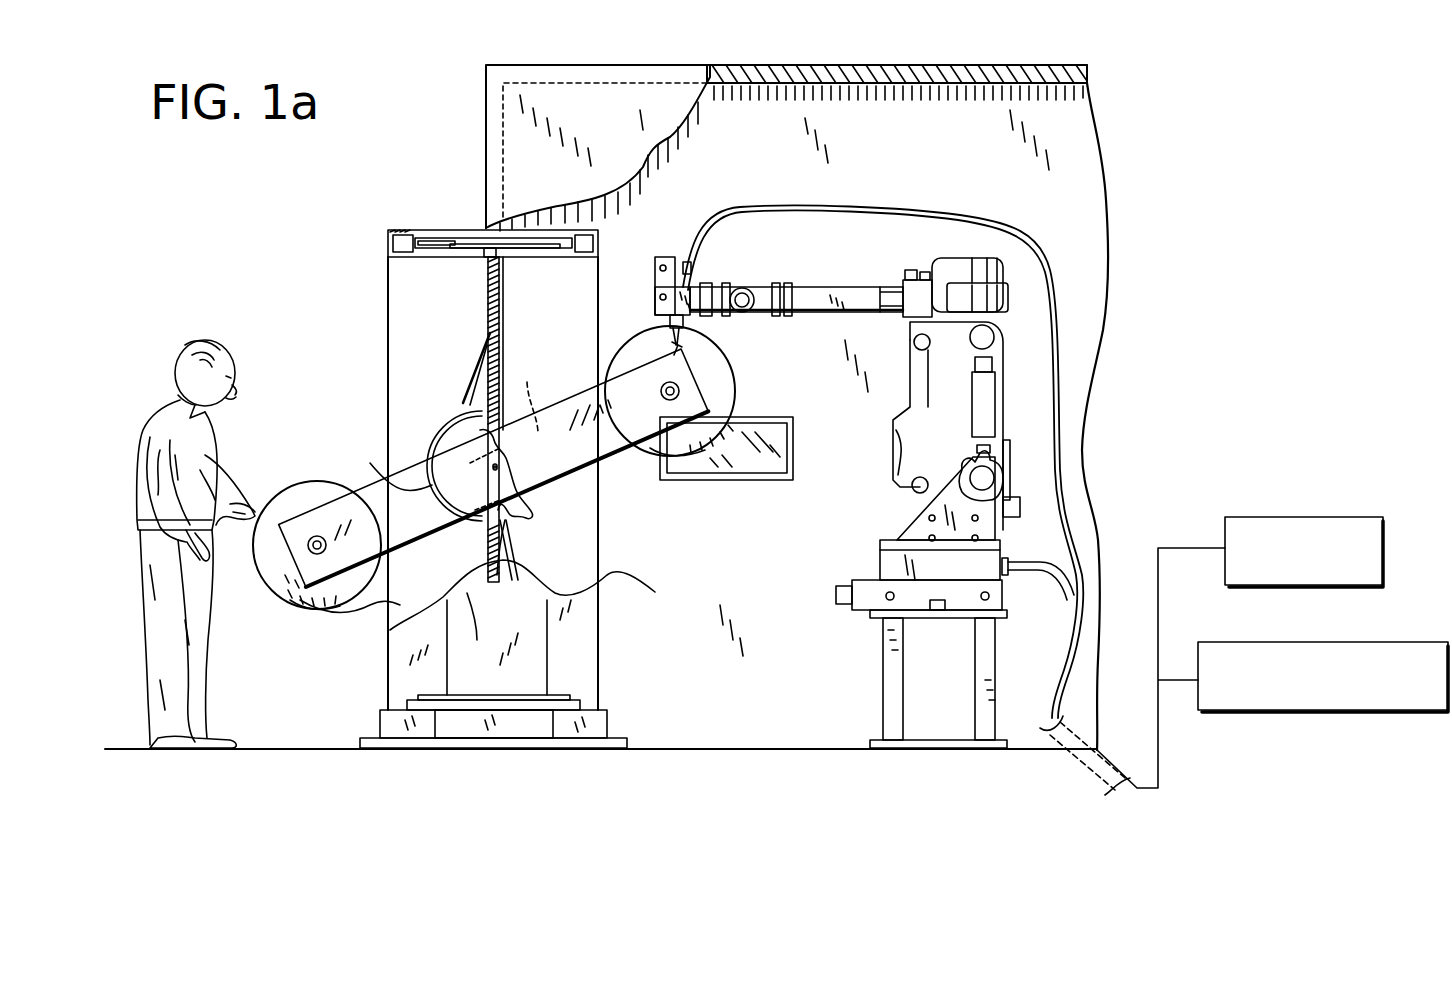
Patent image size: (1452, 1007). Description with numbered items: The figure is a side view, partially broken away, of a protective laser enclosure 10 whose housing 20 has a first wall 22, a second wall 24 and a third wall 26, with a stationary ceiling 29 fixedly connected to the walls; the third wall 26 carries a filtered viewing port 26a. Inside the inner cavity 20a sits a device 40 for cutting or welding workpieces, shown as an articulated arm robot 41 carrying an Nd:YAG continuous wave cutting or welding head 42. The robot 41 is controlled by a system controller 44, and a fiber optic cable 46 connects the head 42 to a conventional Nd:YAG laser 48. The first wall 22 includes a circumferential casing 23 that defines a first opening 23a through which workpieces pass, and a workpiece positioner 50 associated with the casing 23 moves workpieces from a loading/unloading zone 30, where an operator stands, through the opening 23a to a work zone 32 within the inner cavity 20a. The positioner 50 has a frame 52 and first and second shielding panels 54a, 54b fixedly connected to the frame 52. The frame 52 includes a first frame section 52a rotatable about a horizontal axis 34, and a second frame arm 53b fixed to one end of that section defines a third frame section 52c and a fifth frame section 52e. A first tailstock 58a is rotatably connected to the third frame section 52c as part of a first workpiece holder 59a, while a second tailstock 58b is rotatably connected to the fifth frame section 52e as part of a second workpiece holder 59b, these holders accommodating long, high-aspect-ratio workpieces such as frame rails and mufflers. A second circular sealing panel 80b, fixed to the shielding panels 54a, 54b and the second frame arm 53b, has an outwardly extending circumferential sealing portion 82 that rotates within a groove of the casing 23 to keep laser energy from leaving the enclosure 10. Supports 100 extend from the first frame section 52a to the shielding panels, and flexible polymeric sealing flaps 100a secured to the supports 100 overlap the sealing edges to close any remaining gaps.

The protective laser enclosure 10 is at (1133, 127).
The housing 20 is at (1040, 67).
The inner cavity 20a is at (1082, 305).
The first wall 22 is at (486, 126).
The circumferential casing 23 is at (595, 224).
The first opening 23a is at (420, 262).
The second wall 24 is at (637, 100).
The third wall 26 is at (1075, 212).
The filtered viewing port 26a is at (776, 461).
The stationary ceiling 29 is at (842, 67).
The workpiece loading/unloading zone 30 is at (270, 485).
The work zone 32 is at (670, 250).
The horizontal axis 34 is at (494, 470).
The device for cutting or welding workpieces 40 is at (940, 203).
The articulated arm robot 41 is at (850, 290).
The cutting or welding head 42 is at (700, 344).
The system controller 44 is at (1305, 710).
The fiber optic cable 46 is at (1067, 510).
The Nd:YAG laser 48 is at (1313, 517).
The workpiece positioner 50 is at (348, 288).
The frame 52 is at (395, 525).
The first frame section 52a is at (529, 393).
The third frame section 52c is at (302, 580).
The fifth frame section 52e is at (593, 408).
The second frame arm 53b is at (336, 488).
The first shielding panel 54a is at (467, 610).
The second shielding panel 54b is at (497, 300).
The first tailstock 58a is at (277, 580).
The second tailstock 58b is at (720, 390).
The first workpiece holder 59a is at (340, 600).
The second workpiece holder 59b is at (700, 445).
The second circular sealing panel 80b is at (435, 433).
The circumferential sealing portion 82 is at (428, 475).
The support 100 is at (460, 391).
The flexible polymeric sealing flap 100a is at (487, 365).